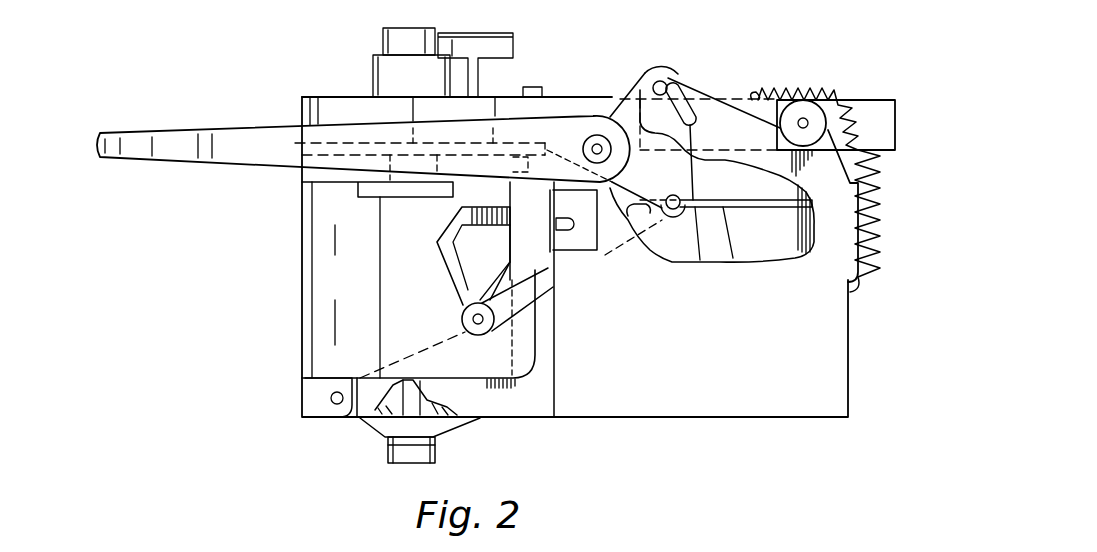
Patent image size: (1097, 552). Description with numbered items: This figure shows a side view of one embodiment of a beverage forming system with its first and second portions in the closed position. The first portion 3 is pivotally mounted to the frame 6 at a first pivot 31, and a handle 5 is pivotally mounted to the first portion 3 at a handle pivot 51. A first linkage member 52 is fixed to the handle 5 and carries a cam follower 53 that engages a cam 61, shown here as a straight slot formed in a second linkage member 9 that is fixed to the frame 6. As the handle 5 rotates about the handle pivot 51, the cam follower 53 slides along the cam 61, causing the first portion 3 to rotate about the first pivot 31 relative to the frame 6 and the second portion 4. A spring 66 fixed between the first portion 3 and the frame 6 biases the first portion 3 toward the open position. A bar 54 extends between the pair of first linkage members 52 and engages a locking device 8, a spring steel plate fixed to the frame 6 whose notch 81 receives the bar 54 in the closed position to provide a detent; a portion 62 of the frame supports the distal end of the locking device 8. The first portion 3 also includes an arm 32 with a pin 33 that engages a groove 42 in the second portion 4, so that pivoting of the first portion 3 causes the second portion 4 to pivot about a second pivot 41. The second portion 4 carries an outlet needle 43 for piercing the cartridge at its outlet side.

The first portion 3 is at (328, 97).
The second portion 4 is at (312, 276).
The handle 5 is at (138, 147).
The frame 6 is at (848, 327).
The locking device 8 is at (791, 256).
The second linkage member 9 is at (652, 70).
The first pivot 31 is at (806, 118).
The arm 32 is at (552, 278).
The pin 33 is at (482, 330).
The second pivot 41 is at (335, 405).
The groove 42 is at (450, 281).
The outlet needle 43 is at (480, 418).
The handle pivot 51 is at (596, 146).
The first linkage member 52 is at (622, 100).
The cam follower 53 is at (664, 84).
The bar 54 is at (673, 212).
The cam 61 is at (704, 108).
The portion of the frame 62 is at (739, 240).
The spring 66 is at (840, 93).
The notch 81 is at (641, 236).